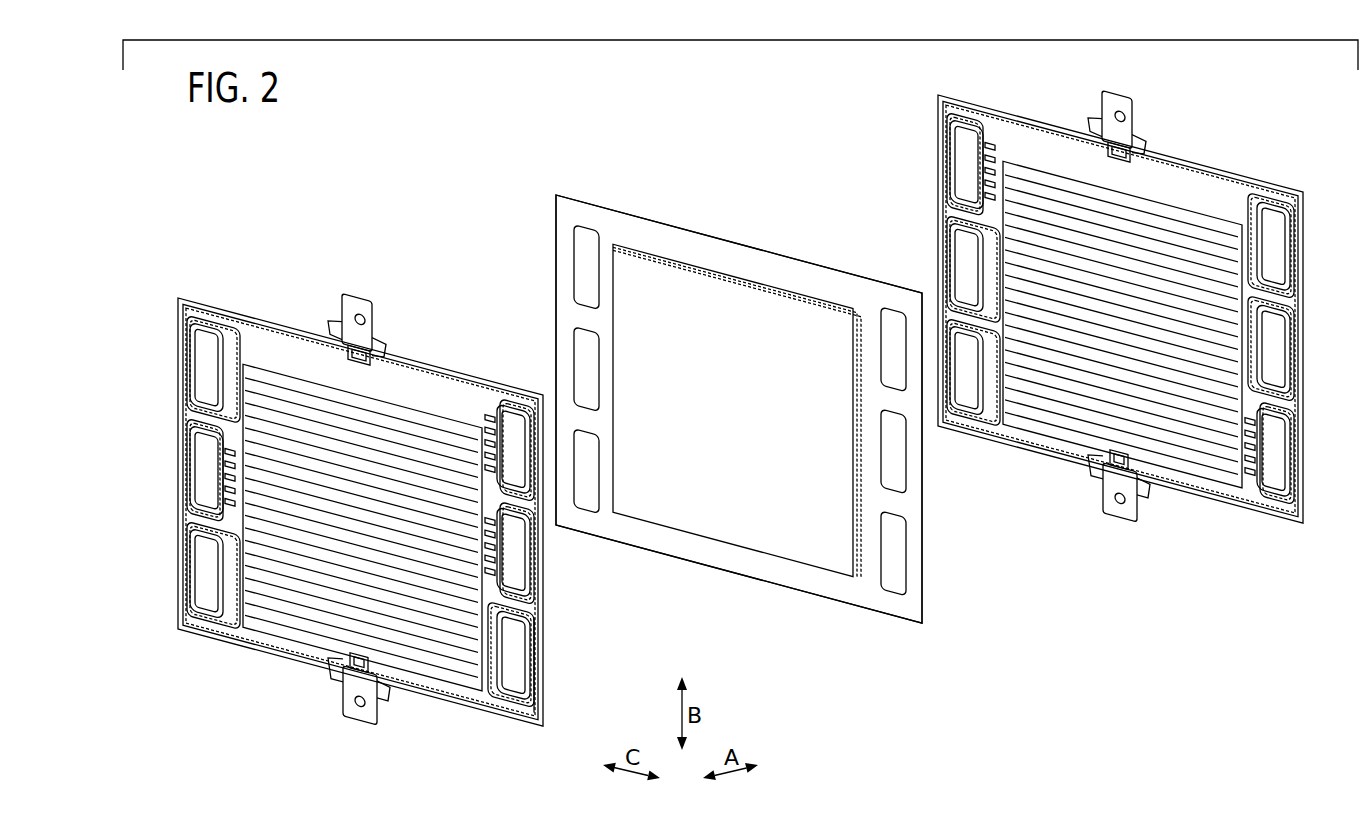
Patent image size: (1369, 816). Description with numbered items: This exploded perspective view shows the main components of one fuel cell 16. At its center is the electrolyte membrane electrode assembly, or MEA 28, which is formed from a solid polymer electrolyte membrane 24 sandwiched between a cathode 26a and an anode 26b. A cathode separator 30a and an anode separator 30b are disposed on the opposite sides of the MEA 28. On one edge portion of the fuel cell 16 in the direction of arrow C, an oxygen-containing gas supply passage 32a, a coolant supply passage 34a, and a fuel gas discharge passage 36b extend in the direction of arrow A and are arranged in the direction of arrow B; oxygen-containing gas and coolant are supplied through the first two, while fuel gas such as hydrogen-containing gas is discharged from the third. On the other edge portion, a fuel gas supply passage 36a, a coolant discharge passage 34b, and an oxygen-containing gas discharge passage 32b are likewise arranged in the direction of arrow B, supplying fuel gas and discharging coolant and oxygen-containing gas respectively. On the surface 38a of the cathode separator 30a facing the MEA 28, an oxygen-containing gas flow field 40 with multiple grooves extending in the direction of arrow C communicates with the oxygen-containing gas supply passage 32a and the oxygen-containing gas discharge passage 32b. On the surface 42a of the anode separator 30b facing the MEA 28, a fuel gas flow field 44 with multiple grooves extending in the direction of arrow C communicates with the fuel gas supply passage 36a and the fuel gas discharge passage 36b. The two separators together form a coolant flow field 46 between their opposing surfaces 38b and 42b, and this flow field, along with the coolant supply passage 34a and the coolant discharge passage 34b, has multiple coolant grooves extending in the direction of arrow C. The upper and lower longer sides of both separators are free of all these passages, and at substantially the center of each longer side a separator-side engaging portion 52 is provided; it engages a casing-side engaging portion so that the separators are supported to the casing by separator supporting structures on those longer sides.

The fuel cell 16 is at (375, 153).
The solid polymer electrolyte membrane 24 is at (613, 222).
The cathode 26a is at (762, 280).
The anode 26b is at (705, 290).
The electrolyte membrane electrode assembly (MEA) 28 is at (549, 183).
The cathode separator 30a is at (936, 127).
The anode separator 30b is at (214, 300).
The oxygen-containing gas supply passage 32a is at (207, 364).
The oxygen-containing gas discharge passage 32b is at (513, 671).
The coolant supply passage 34a is at (207, 472).
The coolant discharge passage 34b is at (515, 559).
The fuel gas supply passage 36a is at (515, 428).
The fuel gas discharge passage 36b is at (207, 559).
The surface of the cathode separator facing the MEA 38a is at (1293, 392).
The opposing surface of the cathode separator 38b is at (1296, 421).
The oxygen-containing gas flow field 40 is at (1034, 162).
The surface of the anode separator facing the MEA 42a is at (541, 632).
The opposing surface of the anode separator 42b is at (536, 594).
The fuel gas flow field 44 is at (284, 385).
The coolant flow field 46 is at (277, 611).
The separator-side engaging portion 52 is at (347, 300).